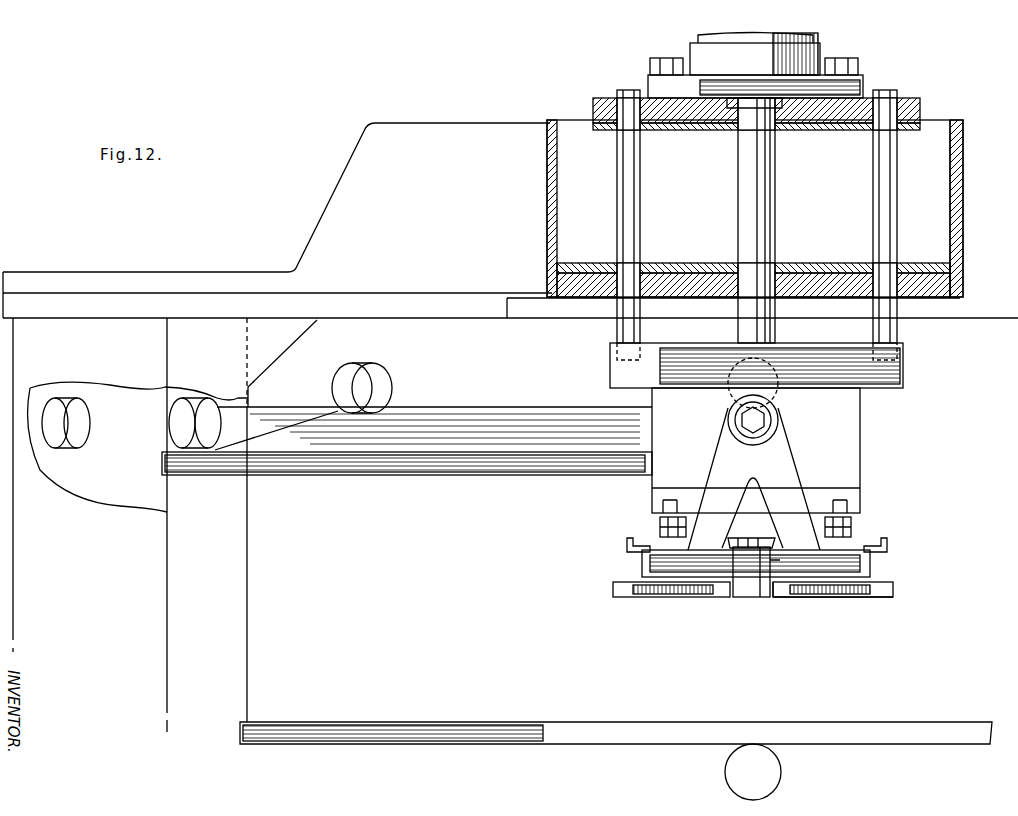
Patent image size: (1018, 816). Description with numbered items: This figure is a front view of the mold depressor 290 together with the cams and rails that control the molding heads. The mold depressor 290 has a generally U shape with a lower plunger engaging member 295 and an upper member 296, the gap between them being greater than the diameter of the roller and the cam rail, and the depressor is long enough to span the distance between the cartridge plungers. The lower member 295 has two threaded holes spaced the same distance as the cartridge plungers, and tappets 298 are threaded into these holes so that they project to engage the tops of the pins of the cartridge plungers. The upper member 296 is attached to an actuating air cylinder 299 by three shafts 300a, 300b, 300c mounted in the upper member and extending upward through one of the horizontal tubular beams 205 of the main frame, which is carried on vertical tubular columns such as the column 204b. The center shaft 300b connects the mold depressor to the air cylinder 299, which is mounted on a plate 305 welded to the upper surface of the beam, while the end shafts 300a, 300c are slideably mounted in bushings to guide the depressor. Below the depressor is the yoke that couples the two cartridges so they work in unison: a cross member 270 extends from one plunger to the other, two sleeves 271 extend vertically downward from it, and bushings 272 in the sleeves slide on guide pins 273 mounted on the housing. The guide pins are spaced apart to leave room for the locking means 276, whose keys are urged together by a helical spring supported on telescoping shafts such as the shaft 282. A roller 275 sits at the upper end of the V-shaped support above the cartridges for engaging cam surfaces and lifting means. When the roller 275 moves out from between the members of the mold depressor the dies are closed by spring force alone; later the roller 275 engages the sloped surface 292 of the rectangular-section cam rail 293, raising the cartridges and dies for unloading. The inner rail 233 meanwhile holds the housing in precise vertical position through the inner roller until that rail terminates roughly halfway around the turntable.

The horizontal tubular beam 205 is at (495, 127).
The plate 305 is at (915, 105).
The actuating air cylinder 299 is at (820, 50).
The end shaft 300a is at (630, 212).
The center shaft 300b is at (770, 200).
The end shaft 300c is at (880, 208).
The upper member 296 is at (903, 381).
The mold depressor 290 is at (918, 339).
The lower plunger engaging member 295 is at (855, 498).
The roller 275 is at (780, 416).
The tappet 298 is at (657, 524).
The bushing 272 is at (628, 549).
The cross member 270 is at (870, 567).
The sleeve 271 is at (780, 587).
The guide pin 273 is at (752, 552).
The shaft 282 is at (770, 582).
The locking means 276 is at (735, 556).
The sloped surface 292 is at (302, 423).
The cam rail 293 is at (522, 462).
The vertical tubular column 204b is at (233, 557).
The inner rail 233 is at (447, 733).